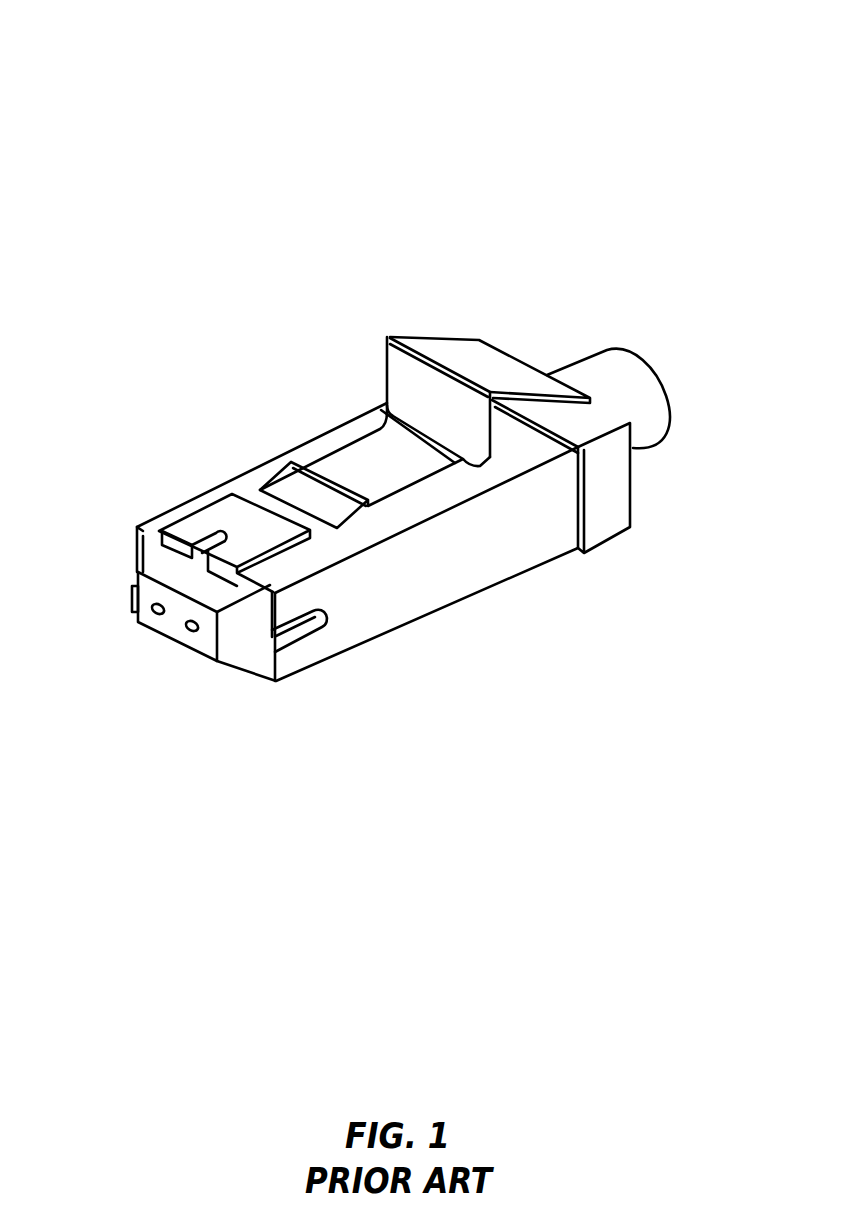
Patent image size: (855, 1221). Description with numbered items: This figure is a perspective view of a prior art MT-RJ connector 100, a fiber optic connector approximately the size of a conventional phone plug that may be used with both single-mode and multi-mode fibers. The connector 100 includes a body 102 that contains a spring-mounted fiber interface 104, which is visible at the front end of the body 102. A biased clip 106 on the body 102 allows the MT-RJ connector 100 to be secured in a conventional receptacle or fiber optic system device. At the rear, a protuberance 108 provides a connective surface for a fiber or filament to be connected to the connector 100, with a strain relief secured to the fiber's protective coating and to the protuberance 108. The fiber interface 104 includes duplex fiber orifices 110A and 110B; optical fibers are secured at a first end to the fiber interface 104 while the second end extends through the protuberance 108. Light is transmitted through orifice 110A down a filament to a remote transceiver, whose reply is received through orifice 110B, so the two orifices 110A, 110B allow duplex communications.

The MT-RJ connector 100 is at (513, 120).
The body 102 is at (397, 606).
The spring-mounted fiber interface 104 is at (232, 647).
The biased clip 106 is at (458, 350).
The protuberance 108 is at (607, 377).
The fiber orifice 110A is at (157, 617).
The fiber orifice 110B is at (193, 634).